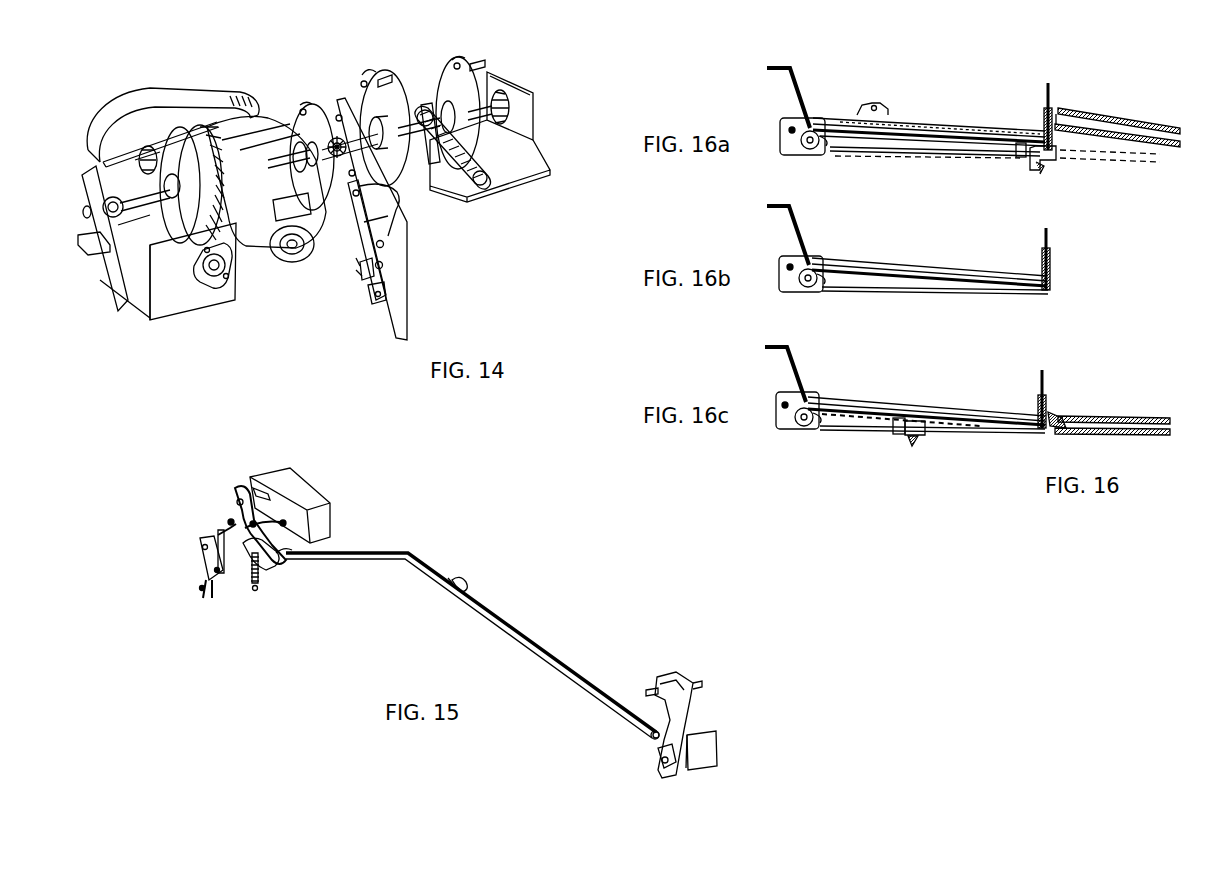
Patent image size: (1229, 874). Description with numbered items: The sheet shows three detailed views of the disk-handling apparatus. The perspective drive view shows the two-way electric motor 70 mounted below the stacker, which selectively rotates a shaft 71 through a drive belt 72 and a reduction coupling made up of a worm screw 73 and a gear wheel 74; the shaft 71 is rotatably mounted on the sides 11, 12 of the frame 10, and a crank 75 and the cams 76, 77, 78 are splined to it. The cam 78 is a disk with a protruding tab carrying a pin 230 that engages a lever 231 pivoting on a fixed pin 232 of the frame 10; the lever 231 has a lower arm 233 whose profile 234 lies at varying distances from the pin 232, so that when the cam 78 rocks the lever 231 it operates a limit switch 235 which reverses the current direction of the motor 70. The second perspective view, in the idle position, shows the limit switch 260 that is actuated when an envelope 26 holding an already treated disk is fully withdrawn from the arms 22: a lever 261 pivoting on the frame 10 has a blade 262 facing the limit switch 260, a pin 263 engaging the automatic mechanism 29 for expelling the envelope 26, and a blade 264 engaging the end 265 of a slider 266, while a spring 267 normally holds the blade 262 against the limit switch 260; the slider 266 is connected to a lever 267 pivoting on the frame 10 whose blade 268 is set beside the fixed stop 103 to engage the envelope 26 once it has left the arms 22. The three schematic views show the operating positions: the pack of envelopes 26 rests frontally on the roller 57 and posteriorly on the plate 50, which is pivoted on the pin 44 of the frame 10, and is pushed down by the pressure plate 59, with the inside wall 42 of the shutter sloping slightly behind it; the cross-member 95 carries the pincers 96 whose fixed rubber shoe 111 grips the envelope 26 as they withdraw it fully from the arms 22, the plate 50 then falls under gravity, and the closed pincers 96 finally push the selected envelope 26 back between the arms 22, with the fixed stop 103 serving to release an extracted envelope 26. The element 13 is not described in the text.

In FIG. 14, the frame 10 is at (497, 182).
In FIG. 14, the side 11 is at (105, 178).
In FIG. 14, the side 12 is at (520, 94).
In FIG. 16A, the stop post 13 is at (1045, 102).
In FIG. 16B, the stop post 13 is at (1043, 252).
In FIG. 16C, the stop post 13 is at (1041, 389).
In FIG. 16A, the arms 22 is at (1143, 126).
In FIG. 16C, the arms 22 is at (1124, 420).
In FIG. 16A, the envelope 26 is at (918, 126).
In FIG. 16B, the envelope 26 is at (870, 268).
In FIG. 16C, the envelope 26 is at (874, 404).
In FIG. 15, the automatic mechanism 29 is at (308, 492).
In FIG. 16A, the inside wall 42 is at (800, 100).
In FIG. 16B, the inside wall 42 is at (800, 238).
In FIG. 16C, the inside wall 42 is at (795, 376).
In FIG. 16A, the pin 44 is at (793, 126).
In FIG. 16B, the pin 44 is at (791, 263).
In FIG. 16C, the pin 44 is at (786, 401).
In FIG. 16A, the plate 50 is at (947, 150).
In FIG. 16B, the plate 50 is at (985, 290).
In FIG. 16C, the plate 50 is at (986, 428).
In FIG. 16A, the roller 57 is at (822, 150).
In FIG. 16B, the roller 57 is at (818, 288).
In FIG. 16C, the roller 57 is at (813, 426).
In FIG. 16A, the pressure plate 59 is at (960, 126).
In FIG. 14, the two-way electric motor 70 is at (257, 130).
In FIG. 14, the shaft 71 is at (419, 120).
In FIG. 14, the drive belt 72 is at (188, 98).
In FIG. 14, the worm screw 73 is at (168, 226).
In FIG. 14, the gear wheel 74 is at (166, 138).
In FIG. 14, the crank 75 is at (95, 240).
In FIG. 14, the cam 76 is at (442, 85).
In FIG. 14, the cam 77 is at (363, 98).
In FIG. 14, the cam 78 is at (298, 112).
In FIG. 16A, the cross-member 95 is at (1034, 172).
In FIG. 16C, the cross-member 95 is at (932, 442).
In FIG. 16A, the pincers 96 is at (1013, 160).
In FIG. 16C, the pincers 96 is at (888, 433).
In FIG. 15, the fixed stop 103 is at (696, 762).
In FIG. 16A, the fixed rubber shoe 111 is at (1058, 152).
In FIG. 14, the pin 230 is at (396, 192).
In FIG. 14, the lever 231 is at (390, 226).
In FIG. 14, the fixed pin 232 is at (392, 246).
In FIG. 14, the lower arm 233 is at (393, 260).
In FIG. 14, the profile 234 is at (364, 278).
In FIG. 14, the limit switch 235 is at (368, 290).
In FIG. 15, the limit switch 260 is at (205, 538).
In FIG. 15, the lever 261 is at (234, 498).
In FIG. 15, the blade 262 is at (226, 556).
In FIG. 15, the pin 263 is at (254, 490).
In FIG. 15, the blade 264 is at (267, 572).
In FIG. 15, the end 265 is at (290, 558).
In FIG. 15, the slider 266 is at (530, 646).
In FIG. 15, the spring / lever 267 is at (256, 592).
In FIG. 15, the blade 268 is at (656, 753).